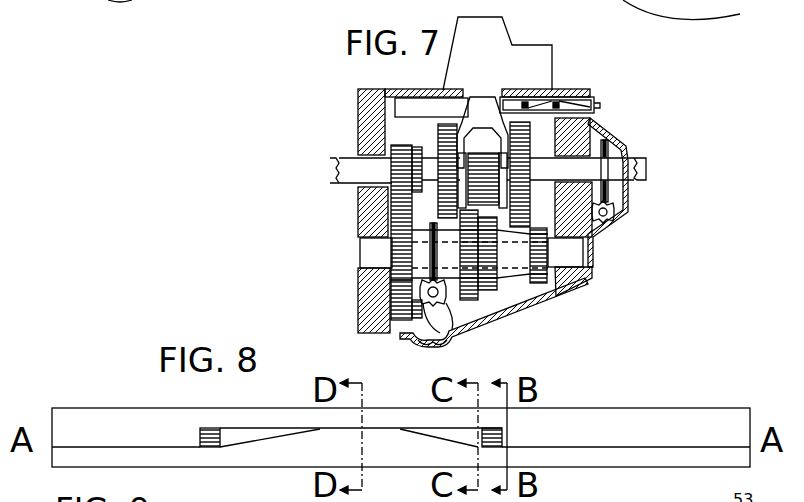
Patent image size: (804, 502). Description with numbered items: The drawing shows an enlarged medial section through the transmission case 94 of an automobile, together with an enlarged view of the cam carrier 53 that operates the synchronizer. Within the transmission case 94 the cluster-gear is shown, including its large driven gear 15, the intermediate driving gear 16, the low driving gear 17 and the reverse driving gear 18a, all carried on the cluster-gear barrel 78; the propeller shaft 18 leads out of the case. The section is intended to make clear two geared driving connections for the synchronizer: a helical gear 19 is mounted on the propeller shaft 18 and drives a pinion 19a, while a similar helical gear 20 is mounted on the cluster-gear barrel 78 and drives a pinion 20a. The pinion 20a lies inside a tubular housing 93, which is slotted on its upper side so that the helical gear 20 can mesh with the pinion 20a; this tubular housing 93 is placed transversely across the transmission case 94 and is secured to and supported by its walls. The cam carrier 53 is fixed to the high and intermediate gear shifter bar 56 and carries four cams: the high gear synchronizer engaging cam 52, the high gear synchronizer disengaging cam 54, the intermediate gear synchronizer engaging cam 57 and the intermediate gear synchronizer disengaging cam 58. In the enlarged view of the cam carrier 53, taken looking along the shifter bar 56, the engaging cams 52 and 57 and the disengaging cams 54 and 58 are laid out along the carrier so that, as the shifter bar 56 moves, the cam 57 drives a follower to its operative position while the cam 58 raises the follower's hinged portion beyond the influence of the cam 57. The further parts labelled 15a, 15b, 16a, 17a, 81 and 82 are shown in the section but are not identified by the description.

In FIG. 7, the large driven gear 15 is at (400, 236).
In FIG. 7, the gear on main shaft 15a is at (393, 150).
In FIG. 7, the gear step on main shaft 15b is at (416, 150).
In FIG. 7, the intermediate driving gear 16 is at (466, 300).
In FIG. 7, the shifter fork and synchro sleeve 16a is at (447, 124).
In FIG. 7, the low driving gear 17 is at (493, 288).
In FIG. 7, the gear 17a is at (517, 122).
In FIG. 7, the propeller shaft 18 is at (625, 168).
In FIG. 7, the reverse driving gear 18a is at (440, 207).
In FIG. 7, the helical gear 19 is at (622, 187).
In FIG. 7, the pinion 19a is at (614, 210).
In FIG. 7, the helical gear 20 is at (394, 290).
In FIG. 7, the pinion 20a is at (414, 304).
In FIG. 7, the high gear synchronizer engaging cam 52 is at (526, 103).
In FIG. 8, the high gear synchronizer engaging cam 52 is at (237, 438).
In FIG. 7, the cam carrier 53 is at (598, 109).
In FIG. 8, the cam carrier 53 is at (108, 418).
In FIG. 7, the high gear synchronizer disengaging cam 54 is at (545, 104).
In FIG. 8, the high gear synchronizer disengaging cam 54 is at (277, 444).
In FIG. 7, the high and intermediate gear shifter bar 56 is at (412, 108).
In FIG. 7, the intermediate gear synchronizer engaging cam 57 is at (560, 104).
In FIG. 8, the intermediate gear synchronizer engaging cam 57 is at (467, 440).
In FIG. 7, the intermediate gear synchronizer disengaging cam 58 is at (599, 106).
In FIG. 8, the intermediate gear synchronizer disengaging cam 58 is at (425, 447).
In FIG. 7, the cluster-gear barrel 78 is at (425, 338).
In FIG. 7, the input shaft 81 is at (357, 170).
In FIG. 7, the bearing 82 is at (376, 252).
In FIG. 7, the tubular housing 93 is at (427, 306).
In FIG. 7, the transmission case 94 is at (360, 105).